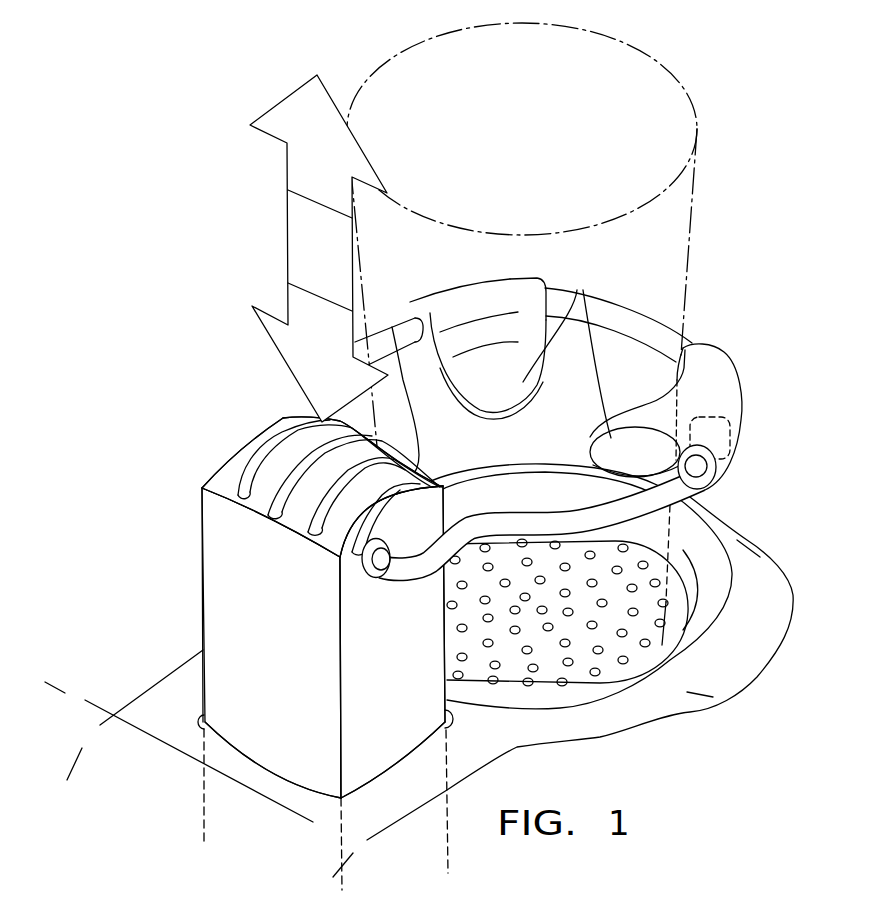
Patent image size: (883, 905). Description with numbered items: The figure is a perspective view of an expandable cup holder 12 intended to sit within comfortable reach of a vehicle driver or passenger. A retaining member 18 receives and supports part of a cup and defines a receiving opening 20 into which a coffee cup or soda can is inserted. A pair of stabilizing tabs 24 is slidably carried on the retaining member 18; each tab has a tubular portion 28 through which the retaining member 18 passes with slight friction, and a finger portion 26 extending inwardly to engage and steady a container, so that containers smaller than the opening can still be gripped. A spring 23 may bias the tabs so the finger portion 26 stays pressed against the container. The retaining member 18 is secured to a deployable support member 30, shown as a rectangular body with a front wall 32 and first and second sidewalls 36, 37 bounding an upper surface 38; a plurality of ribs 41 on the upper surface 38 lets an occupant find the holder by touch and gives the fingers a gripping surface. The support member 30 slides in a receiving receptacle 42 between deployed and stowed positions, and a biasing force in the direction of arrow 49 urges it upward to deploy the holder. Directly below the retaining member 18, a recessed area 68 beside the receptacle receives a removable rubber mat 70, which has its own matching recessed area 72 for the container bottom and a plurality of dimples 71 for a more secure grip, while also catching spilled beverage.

The cup holder 12 is at (741, 203).
The retaining member 18 is at (696, 340).
The receiving opening 20 is at (613, 343).
The spring 23 is at (720, 430).
The stabilizing tabs 24 is at (482, 277).
The finger portion 26 is at (583, 290).
The tubular portion 28 is at (523, 277).
The support member 30 is at (262, 632).
The front wall 32 is at (392, 327).
The first sidewall 36 is at (205, 613).
The second sidewall 37 is at (222, 538).
The upper surface 38 is at (277, 427).
The ribs 41 is at (298, 477).
The receiving receptacle 42 is at (222, 740).
The arrow 49 is at (312, 152).
The recessed area 68 is at (730, 577).
The rubber mat 70 is at (615, 668).
The dimples 71 is at (633, 587).
The recessed area 72 is at (670, 771).